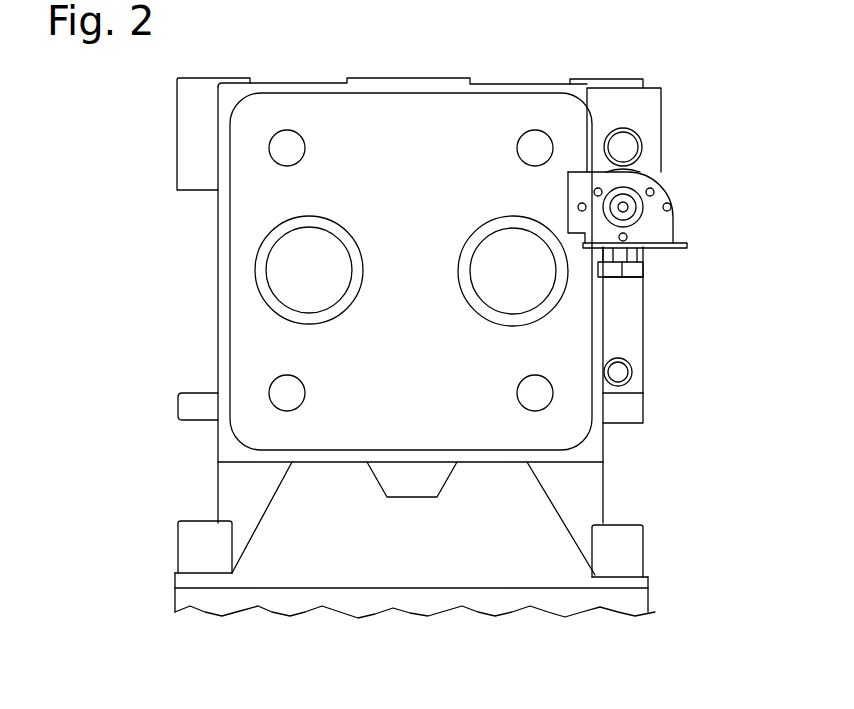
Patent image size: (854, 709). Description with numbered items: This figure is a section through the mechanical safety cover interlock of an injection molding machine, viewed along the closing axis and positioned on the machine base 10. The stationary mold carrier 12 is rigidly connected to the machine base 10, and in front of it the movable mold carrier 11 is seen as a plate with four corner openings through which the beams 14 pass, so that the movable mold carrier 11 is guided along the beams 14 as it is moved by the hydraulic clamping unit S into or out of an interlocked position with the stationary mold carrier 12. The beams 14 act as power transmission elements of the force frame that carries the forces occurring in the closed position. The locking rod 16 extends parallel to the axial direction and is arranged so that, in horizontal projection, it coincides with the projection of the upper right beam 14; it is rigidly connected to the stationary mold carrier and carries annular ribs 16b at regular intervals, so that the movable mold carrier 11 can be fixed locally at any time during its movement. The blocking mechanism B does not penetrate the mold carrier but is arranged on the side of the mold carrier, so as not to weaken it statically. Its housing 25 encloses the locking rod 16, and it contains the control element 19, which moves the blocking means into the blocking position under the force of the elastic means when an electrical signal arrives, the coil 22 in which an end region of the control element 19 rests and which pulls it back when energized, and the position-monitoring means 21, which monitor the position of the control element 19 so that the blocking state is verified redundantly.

The machine base 10 is at (393, 598).
The movable mold carrier 11 is at (572, 427).
The stationary mold carrier 12 is at (197, 132).
The beams 14 is at (290, 148).
The locking rod 16 is at (622, 148).
The annular ribs 16b is at (638, 132).
The control element 19 is at (628, 210).
The position-monitoring means 21 is at (608, 257).
The coil 22 is at (635, 207).
The housing 25 is at (628, 107).
The blocking mechanism B is at (667, 175).
The hydraulic clamping unit S is at (350, 300).